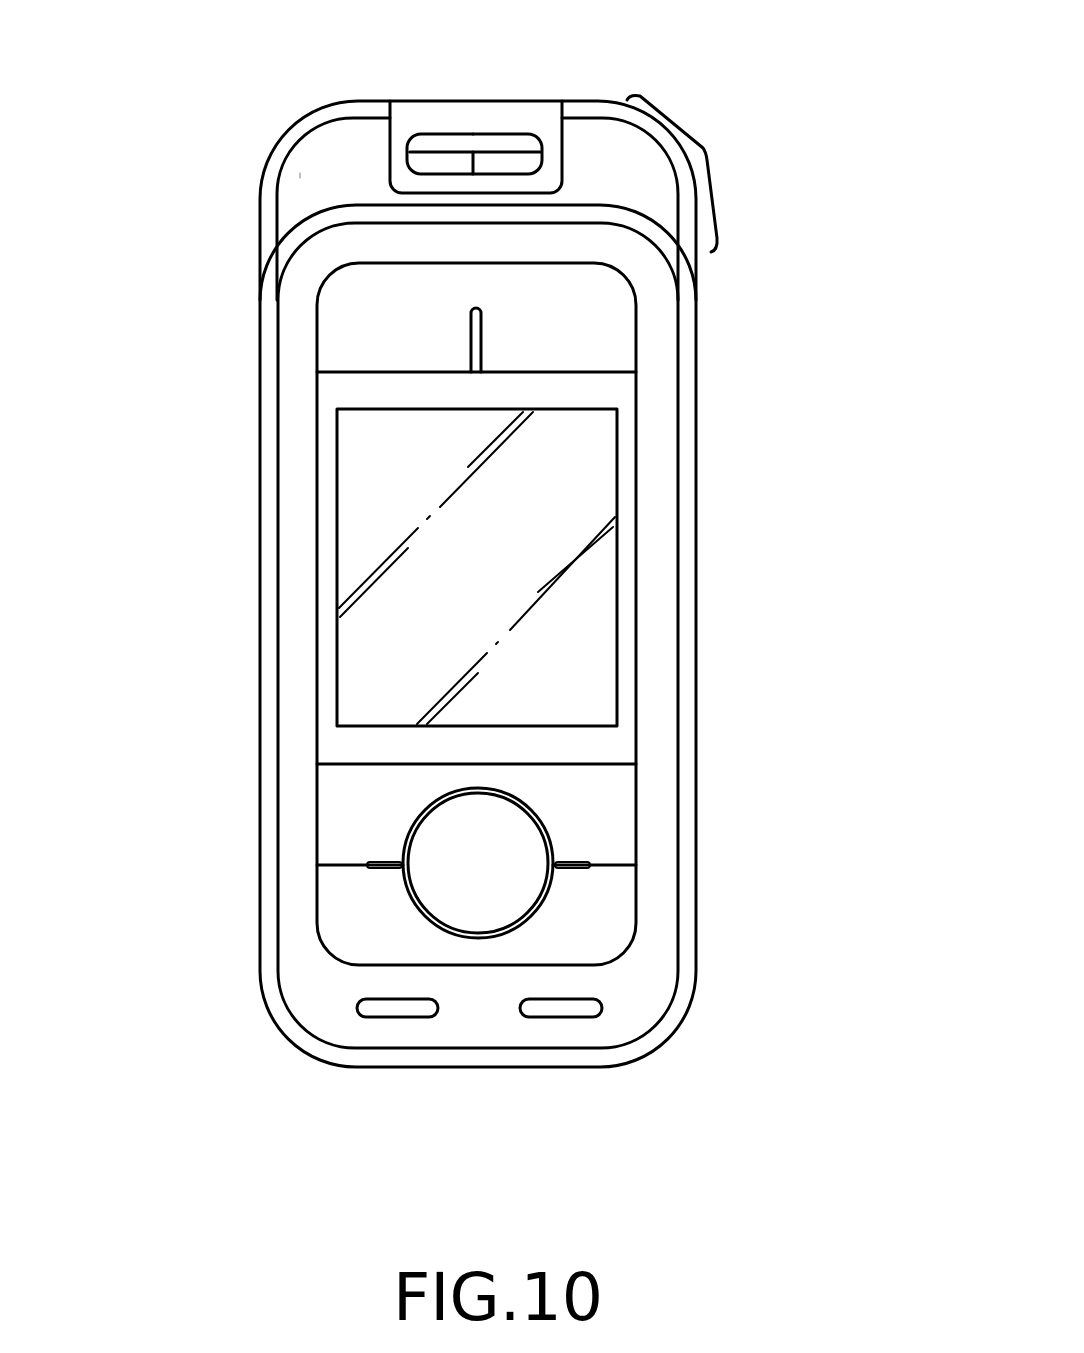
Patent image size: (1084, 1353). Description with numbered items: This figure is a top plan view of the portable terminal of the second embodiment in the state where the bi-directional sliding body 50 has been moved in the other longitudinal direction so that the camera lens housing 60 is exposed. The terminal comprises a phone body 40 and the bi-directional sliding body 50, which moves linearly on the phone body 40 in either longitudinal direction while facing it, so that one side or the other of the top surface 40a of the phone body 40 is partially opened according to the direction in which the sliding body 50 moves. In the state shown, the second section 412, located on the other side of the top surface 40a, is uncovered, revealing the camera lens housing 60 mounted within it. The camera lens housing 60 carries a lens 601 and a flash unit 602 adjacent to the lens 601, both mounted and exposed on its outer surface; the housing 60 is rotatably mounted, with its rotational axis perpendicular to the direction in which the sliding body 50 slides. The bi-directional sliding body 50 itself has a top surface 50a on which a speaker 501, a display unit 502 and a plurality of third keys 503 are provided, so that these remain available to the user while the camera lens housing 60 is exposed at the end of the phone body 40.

The phone body 40 is at (474, 167).
The top surface of the phone body 40a is at (300, 173).
The camera lens housing 60 is at (476, 97).
The lens 601 is at (433, 158).
The flash unit 602 is at (522, 155).
The second section 412 is at (703, 153).
The bi-directional sliding body 50 is at (478, 674).
The top surface of the bi-directional sliding body 50a is at (662, 720).
The speaker 501 is at (481, 342).
The display unit 502 is at (600, 560).
The third keys 503 is at (523, 835).